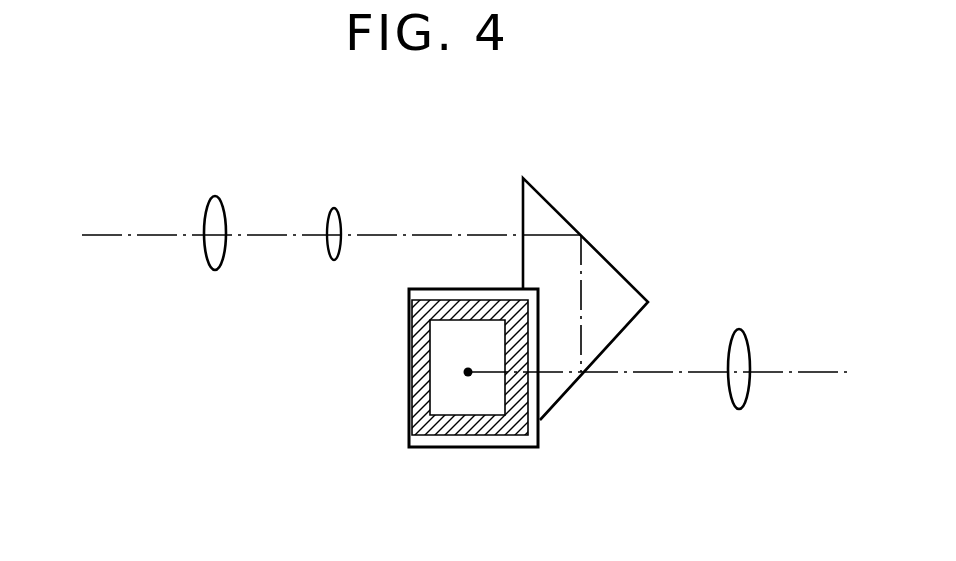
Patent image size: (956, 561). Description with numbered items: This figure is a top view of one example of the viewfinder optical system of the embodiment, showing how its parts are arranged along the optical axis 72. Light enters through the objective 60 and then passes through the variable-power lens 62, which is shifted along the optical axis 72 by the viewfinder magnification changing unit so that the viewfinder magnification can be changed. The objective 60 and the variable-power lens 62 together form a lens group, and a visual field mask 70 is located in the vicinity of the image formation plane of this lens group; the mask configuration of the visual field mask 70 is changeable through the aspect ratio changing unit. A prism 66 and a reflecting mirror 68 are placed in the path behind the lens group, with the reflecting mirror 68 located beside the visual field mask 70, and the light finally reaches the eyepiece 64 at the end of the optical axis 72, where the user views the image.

The optical axis 72 is at (150, 232).
The objective 60 is at (218, 208).
The variable-power lens 62 is at (335, 220).
The prism 66 is at (620, 268).
The eyepiece 64 is at (740, 345).
The reflecting mirror 68 is at (491, 450).
The visual field mask 70 is at (415, 391).